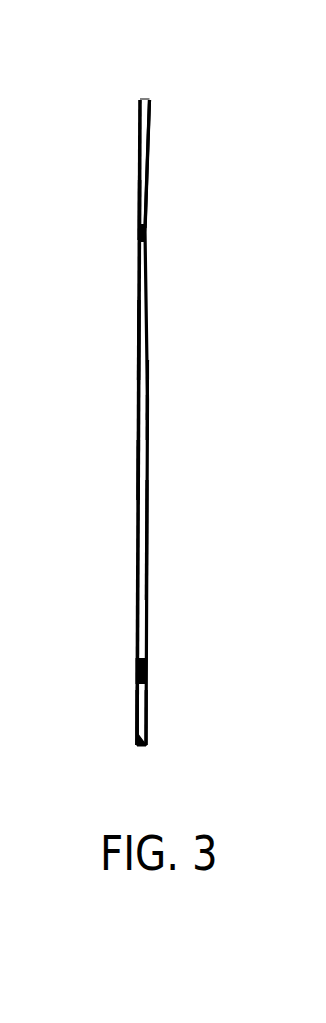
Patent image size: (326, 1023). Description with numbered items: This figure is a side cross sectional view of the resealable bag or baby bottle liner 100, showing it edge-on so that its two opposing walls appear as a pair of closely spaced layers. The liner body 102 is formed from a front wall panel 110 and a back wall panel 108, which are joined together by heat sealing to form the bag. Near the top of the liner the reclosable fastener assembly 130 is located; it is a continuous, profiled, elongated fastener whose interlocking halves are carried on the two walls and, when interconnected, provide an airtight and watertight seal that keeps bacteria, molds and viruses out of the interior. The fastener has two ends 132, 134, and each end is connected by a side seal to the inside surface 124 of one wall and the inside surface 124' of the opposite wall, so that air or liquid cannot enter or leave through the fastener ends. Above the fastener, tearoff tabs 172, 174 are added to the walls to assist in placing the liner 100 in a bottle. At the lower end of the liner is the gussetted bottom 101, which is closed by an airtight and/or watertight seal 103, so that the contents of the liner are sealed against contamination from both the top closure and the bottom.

The resealable bag / baby bottle liner 100 is at (207, 53).
The tearoff tab 174 is at (139, 111).
The tearoff tab 172 is at (150, 138).
The reclosable fastener assembly 130 is at (150, 227).
The end of reclosable fastener 132 is at (150, 235).
The end of reclosable fastener 134 is at (140, 235).
The inside surface 124 is at (84, 340).
The inside surface 124' is at (198, 370).
The front wall panel 110 is at (148, 410).
The back wall panel 108 is at (137, 475).
The liner body 102 is at (146, 535).
The airtight and/or watertight seal 103 is at (137, 660).
The gussetted bottom 101 is at (145, 707).